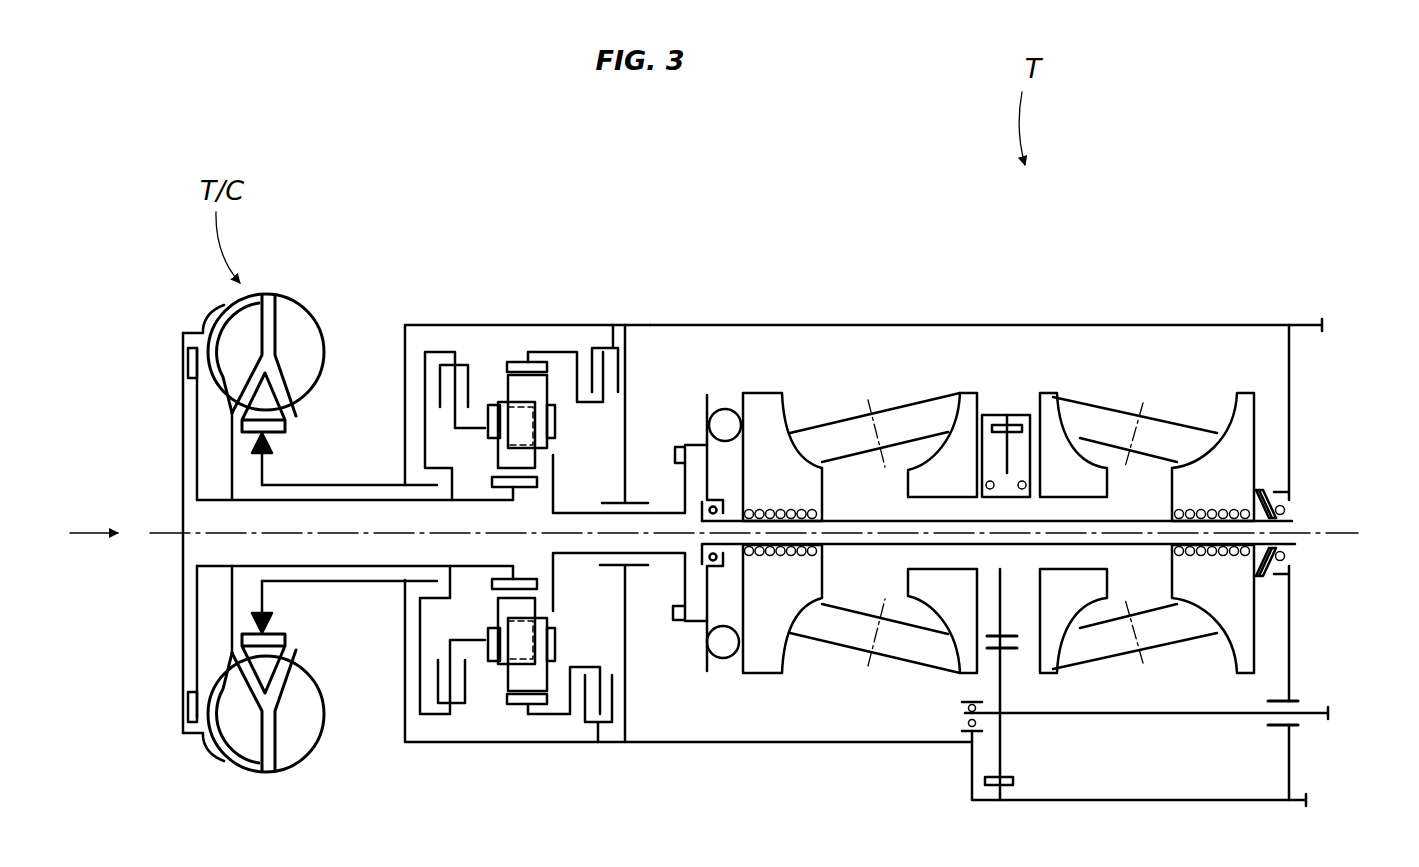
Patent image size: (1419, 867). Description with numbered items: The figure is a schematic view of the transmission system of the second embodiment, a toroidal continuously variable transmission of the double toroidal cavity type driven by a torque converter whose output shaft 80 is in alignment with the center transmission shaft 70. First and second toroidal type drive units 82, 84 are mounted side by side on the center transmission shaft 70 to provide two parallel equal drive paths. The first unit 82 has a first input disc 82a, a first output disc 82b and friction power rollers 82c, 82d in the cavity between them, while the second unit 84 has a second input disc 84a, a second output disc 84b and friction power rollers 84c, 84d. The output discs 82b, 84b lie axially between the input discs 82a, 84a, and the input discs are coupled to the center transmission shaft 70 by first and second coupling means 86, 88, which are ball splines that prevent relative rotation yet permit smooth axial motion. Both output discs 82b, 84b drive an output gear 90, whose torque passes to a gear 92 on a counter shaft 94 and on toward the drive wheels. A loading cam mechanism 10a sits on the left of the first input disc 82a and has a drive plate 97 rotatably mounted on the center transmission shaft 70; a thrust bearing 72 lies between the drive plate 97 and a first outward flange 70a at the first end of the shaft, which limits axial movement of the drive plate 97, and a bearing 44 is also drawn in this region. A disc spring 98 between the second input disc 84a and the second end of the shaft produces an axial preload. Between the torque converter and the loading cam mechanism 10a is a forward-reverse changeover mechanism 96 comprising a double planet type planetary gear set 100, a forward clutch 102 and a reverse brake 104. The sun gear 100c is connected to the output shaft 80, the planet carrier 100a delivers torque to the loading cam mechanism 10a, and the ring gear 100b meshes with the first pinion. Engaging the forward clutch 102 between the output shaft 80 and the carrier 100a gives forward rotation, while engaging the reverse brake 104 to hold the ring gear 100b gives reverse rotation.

The loading cam mechanism 10a is at (727, 362).
The bearing 44 is at (723, 650).
The center transmission shaft 70 is at (842, 547).
The first outward flange 70a is at (687, 510).
The thrust bearing 72 is at (707, 560).
The output shaft 80 is at (335, 568).
The first toroidal type drive unit 82 is at (832, 368).
The first input disc 82a is at (768, 405).
The first output disc 82b is at (968, 395).
The friction power roller 82c is at (912, 420).
The friction power roller 82d is at (910, 647).
The second toroidal type drive unit 84 is at (1128, 365).
The second input disc 84a is at (1245, 395).
The second output disc 84b is at (1050, 395).
The friction power roller 84c is at (1170, 432).
The friction power roller 84d is at (1100, 650).
The first coupling means 86 is at (782, 510).
The second coupling means 88 is at (1170, 515).
The output gear 90 is at (1010, 425).
The gear 92 is at (998, 802).
The counter shaft 94 is at (1160, 716).
The forward-reverse changeover mechanism 96 is at (487, 352).
The drive plate 97 is at (707, 395).
The disc spring 98 is at (1265, 490).
The planetary gear set 100 is at (528, 539).
The planet carrier 100a is at (463, 433).
The ring gear 100b is at (517, 360).
The sun gear 100c is at (537, 478).
The forward clutch 102 is at (455, 365).
The reverse brake 104 is at (612, 325).